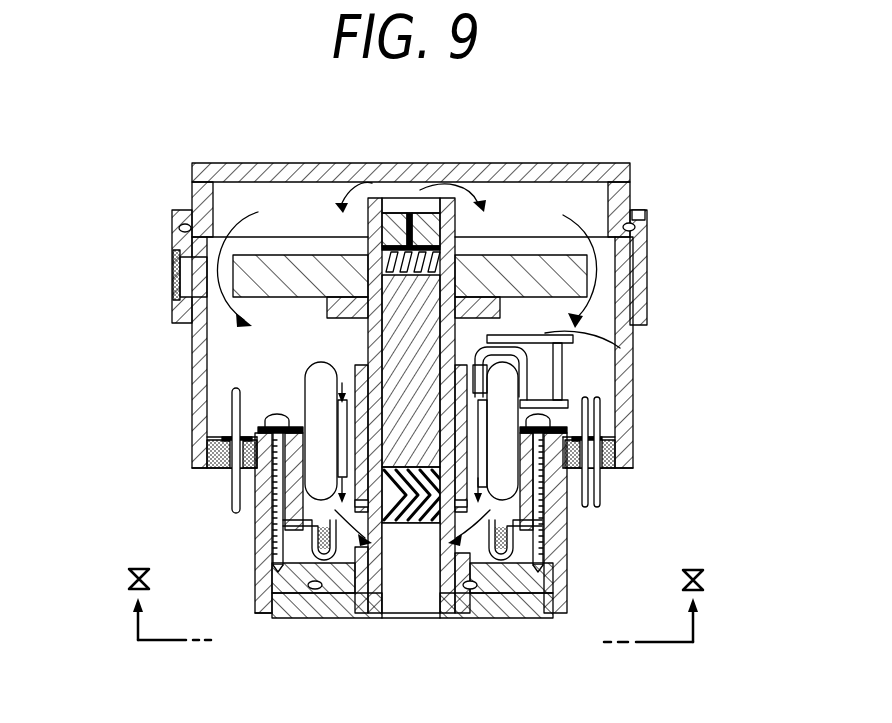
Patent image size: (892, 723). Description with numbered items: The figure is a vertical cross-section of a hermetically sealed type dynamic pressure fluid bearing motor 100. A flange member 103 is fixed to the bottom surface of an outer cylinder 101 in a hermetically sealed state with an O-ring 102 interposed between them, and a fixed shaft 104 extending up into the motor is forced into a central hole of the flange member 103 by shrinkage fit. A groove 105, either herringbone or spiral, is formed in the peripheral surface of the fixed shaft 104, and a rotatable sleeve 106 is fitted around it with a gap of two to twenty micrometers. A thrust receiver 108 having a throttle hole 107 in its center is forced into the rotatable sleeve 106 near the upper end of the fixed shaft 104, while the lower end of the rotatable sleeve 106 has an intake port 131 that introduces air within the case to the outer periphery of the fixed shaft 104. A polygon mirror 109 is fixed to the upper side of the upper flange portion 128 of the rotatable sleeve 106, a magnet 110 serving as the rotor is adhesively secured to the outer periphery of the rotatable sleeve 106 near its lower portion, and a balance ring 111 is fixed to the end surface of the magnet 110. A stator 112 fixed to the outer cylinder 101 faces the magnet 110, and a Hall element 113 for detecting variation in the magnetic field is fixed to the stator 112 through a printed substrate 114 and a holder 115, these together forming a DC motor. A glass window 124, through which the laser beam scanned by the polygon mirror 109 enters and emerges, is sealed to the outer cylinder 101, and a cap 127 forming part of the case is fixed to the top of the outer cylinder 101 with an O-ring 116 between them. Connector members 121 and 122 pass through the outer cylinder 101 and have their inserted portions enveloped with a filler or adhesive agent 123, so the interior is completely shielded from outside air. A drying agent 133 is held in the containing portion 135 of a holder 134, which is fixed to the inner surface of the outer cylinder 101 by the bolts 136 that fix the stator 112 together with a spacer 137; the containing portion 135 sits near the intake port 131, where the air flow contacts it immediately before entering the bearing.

The hermetically sealed type dynamic pressure fluid bearing motor 100 is at (794, 394).
The outer cylinder 101 is at (633, 307).
The O-ring 102 is at (530, 620).
The flange member 103 is at (495, 617).
The fixed shaft 104 is at (407, 600).
The groove 105 is at (425, 300).
The rotatable sleeve 106 is at (356, 370).
The throttle hole 107 is at (416, 198).
The thrust receiver 108 is at (430, 205).
The polygon mirror 109 is at (298, 255).
The magnet 110 is at (355, 440).
The balance ring 111 is at (337, 620).
The stator 112 is at (340, 362).
The Hall element 113 is at (547, 397).
The printed substrate 114 is at (543, 368).
The holder 115 is at (523, 383).
The O-ring 116 is at (645, 250).
The connector member 121 is at (233, 505).
The connector member 122 is at (597, 507).
The filler or adhesive agent 123 is at (218, 470).
The glass window 124 is at (172, 283).
The cap 127 is at (300, 163).
The upper flange portion 128 is at (470, 283).
The intake port 131 is at (374, 613).
The drying agent 133 is at (258, 597).
The holder 134 is at (567, 590).
The containing portion 135 is at (282, 603).
The bolts 136 is at (258, 497).
The spacer 137 is at (560, 562).